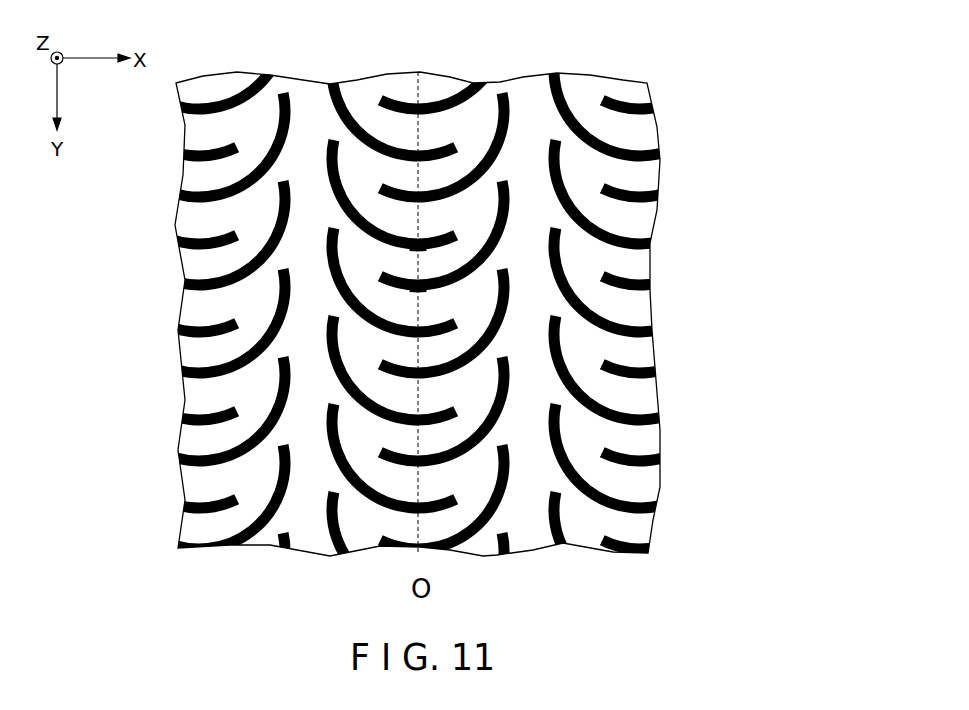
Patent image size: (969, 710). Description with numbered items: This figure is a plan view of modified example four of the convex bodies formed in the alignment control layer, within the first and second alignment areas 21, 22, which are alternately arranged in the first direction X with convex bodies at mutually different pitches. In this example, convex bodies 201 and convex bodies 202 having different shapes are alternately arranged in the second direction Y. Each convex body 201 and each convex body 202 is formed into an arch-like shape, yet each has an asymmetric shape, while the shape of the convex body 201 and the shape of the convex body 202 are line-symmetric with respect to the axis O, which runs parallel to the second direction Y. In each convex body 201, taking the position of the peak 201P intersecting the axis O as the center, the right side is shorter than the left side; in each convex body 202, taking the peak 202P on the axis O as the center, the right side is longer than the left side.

The convex body 201 is at (365, 200).
The convex body 202 is at (488, 235).
The peak 201P is at (413, 257).
The peak 202P is at (430, 299).
The first alignment area 21 is at (417, 339).
The second alignment area 22 is at (531, 562).